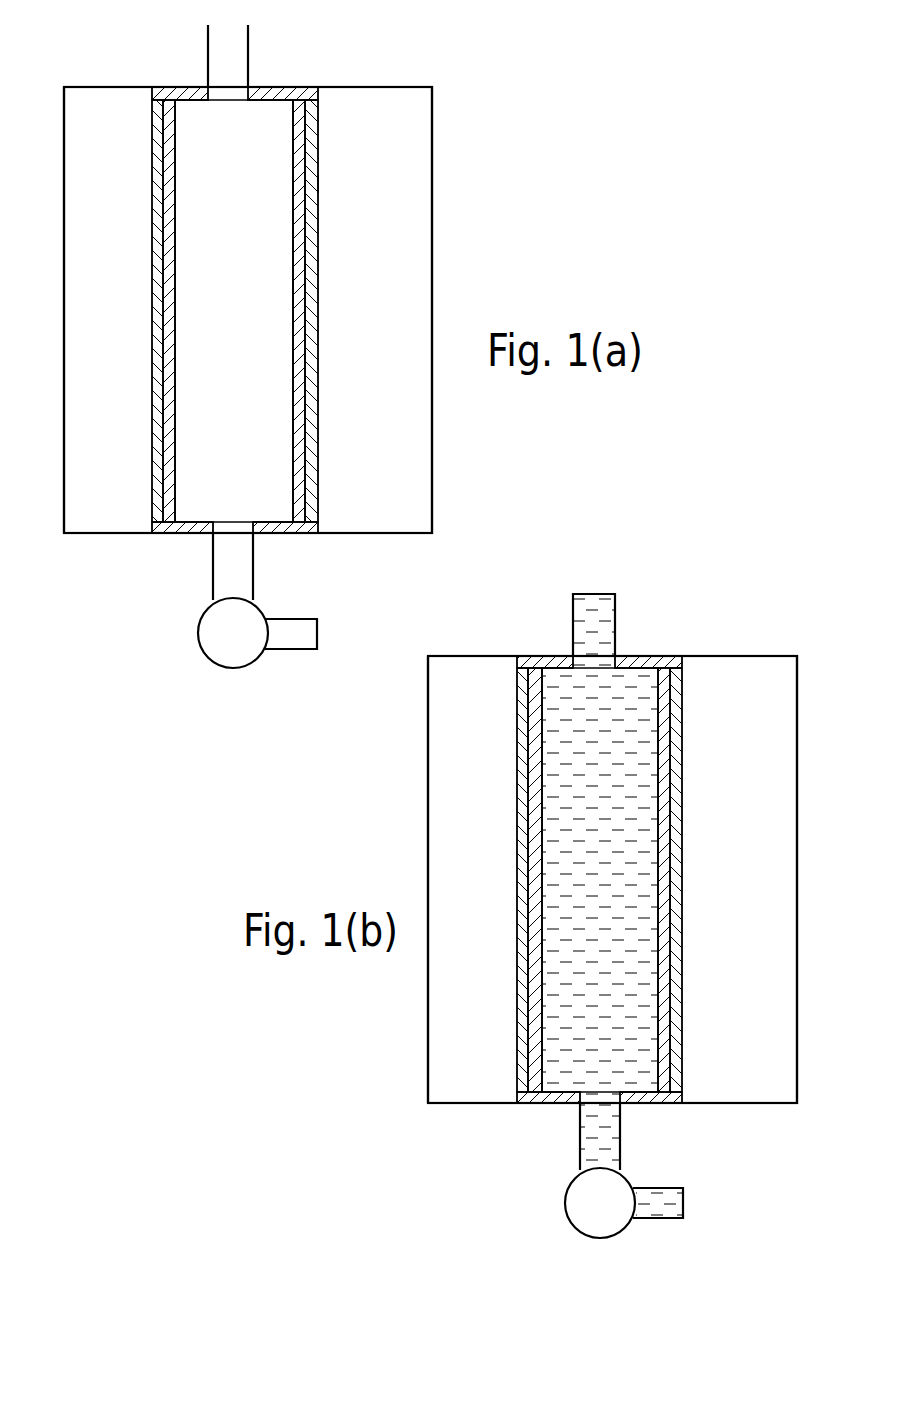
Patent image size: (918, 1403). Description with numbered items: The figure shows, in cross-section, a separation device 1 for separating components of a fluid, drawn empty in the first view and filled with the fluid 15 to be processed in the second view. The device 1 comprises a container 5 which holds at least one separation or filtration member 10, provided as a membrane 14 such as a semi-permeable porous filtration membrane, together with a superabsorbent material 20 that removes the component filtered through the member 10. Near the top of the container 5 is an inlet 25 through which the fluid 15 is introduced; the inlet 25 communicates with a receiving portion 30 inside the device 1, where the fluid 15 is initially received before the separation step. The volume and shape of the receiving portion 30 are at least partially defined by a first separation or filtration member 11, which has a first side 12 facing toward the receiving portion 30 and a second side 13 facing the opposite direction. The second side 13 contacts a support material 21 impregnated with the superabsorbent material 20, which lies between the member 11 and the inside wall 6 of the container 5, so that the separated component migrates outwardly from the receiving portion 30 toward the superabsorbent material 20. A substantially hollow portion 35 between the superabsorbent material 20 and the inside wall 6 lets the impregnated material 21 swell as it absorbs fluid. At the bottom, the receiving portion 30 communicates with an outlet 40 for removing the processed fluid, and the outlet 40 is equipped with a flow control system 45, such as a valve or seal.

In FIG. 1A, the separation device 1 is at (88, 53).
In FIG. 1B, the separation device 1 is at (745, 615).
In FIG. 1A, the container 5 is at (63, 178).
In FIG. 1B, the container 5 is at (428, 740).
In FIG. 1A, the inside wall 6 is at (73, 207).
In FIG. 1B, the inside wall 6 is at (440, 777).
In FIG. 1A, the separation or filtration member 10 is at (307, 124).
In FIG. 1B, the separation or filtration member 10 is at (660, 695).
In FIG. 1A, the first separation or filtration member 11 is at (305, 150).
In FIG. 1B, the first separation or filtration member 11 is at (665, 715).
In FIG. 1A, the first side 12 is at (291, 184).
In FIG. 1A, the second side 13 is at (317, 184).
In FIG. 1A, the membrane 14 is at (298, 212).
In FIG. 1B, the membrane 14 is at (668, 770).
In FIG. 1B, the fluid 15 is at (562, 688).
In FIG. 1A, the superabsorbent material 20 is at (302, 310).
In FIG. 1B, the superabsorbent material 20 is at (675, 879).
In FIG. 1A, the support material 21 is at (315, 125).
In FIG. 1B, the support material 21 is at (677, 700).
In FIG. 1A, the inlet 25 is at (238, 56).
In FIG. 1B, the inlet 25 is at (605, 622).
In FIG. 1A, the receiving portion 30 is at (251, 309).
In FIG. 1B, the receiving portion 30 is at (618, 872).
In FIG. 1A, the hollow portion 35 is at (393, 309).
In FIG. 1B, the hollow portion 35 is at (760, 879).
In FIG. 1A, the outlet 40 is at (240, 570).
In FIG. 1B, the outlet 40 is at (605, 1140).
In FIG. 1A, the flow control system 45 is at (225, 637).
In FIG. 1B, the flow control system 45 is at (590, 1205).